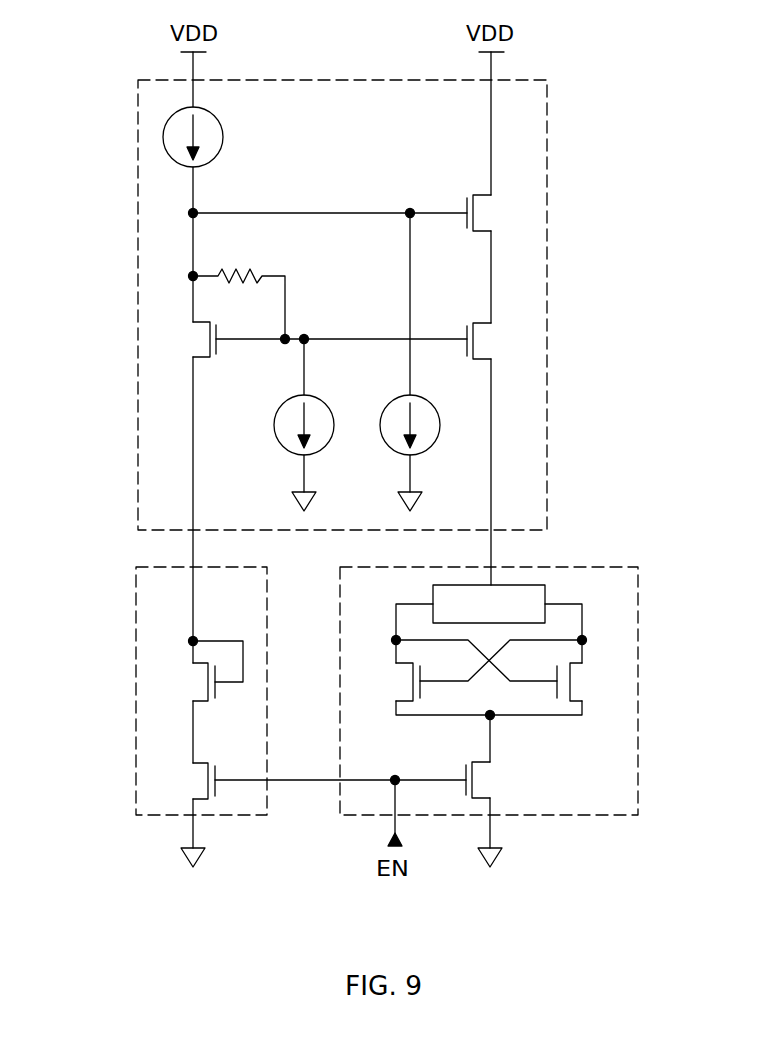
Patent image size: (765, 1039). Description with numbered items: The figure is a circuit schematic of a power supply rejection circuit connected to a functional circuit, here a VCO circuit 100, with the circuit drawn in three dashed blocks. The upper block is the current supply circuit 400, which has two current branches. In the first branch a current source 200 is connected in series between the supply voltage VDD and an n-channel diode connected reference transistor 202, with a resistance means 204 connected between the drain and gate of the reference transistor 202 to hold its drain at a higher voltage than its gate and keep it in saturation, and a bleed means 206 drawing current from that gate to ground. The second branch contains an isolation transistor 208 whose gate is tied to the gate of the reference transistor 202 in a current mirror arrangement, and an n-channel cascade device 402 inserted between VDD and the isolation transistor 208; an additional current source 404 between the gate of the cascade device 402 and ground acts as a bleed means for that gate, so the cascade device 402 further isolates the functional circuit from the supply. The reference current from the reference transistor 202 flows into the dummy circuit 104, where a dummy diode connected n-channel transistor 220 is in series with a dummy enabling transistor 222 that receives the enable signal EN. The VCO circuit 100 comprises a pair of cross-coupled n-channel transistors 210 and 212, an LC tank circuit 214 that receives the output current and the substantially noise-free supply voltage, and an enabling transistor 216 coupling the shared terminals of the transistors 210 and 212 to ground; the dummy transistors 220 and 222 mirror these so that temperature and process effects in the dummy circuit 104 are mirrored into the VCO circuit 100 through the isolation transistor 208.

The VCO circuit 100 is at (638, 640).
The dummy circuit 104 is at (136, 635).
The current source 200 is at (223, 128).
The reference transistor 202 is at (312, 339).
The resistance means 204 is at (262, 273).
The bleed means 206 is at (283, 398).
The isolation transistor 208 is at (493, 341).
The cross-coupled n-channel transistor 210 is at (392, 682).
The cross-coupled n-channel transistor 212 is at (586, 682).
The LC tank circuit 214 is at (489, 604).
The enabling transistor 216 is at (493, 814).
The dummy diode connected n-channel transistor 220 is at (200, 669).
The dummy enabling transistor 222 is at (310, 815).
The current supply circuit 400 is at (547, 250).
The cascade device 402 is at (493, 213).
The current source 404 is at (398, 399).